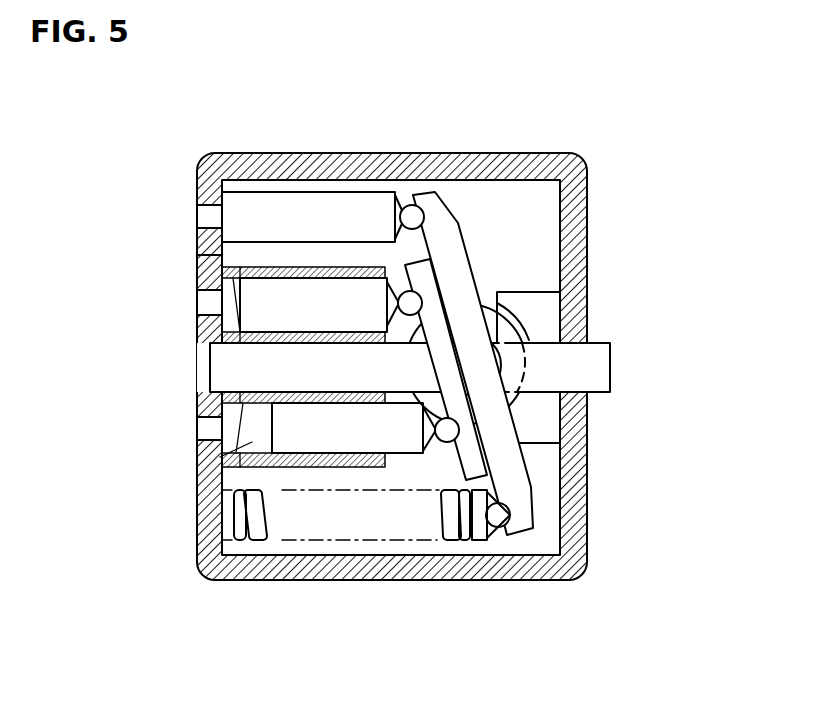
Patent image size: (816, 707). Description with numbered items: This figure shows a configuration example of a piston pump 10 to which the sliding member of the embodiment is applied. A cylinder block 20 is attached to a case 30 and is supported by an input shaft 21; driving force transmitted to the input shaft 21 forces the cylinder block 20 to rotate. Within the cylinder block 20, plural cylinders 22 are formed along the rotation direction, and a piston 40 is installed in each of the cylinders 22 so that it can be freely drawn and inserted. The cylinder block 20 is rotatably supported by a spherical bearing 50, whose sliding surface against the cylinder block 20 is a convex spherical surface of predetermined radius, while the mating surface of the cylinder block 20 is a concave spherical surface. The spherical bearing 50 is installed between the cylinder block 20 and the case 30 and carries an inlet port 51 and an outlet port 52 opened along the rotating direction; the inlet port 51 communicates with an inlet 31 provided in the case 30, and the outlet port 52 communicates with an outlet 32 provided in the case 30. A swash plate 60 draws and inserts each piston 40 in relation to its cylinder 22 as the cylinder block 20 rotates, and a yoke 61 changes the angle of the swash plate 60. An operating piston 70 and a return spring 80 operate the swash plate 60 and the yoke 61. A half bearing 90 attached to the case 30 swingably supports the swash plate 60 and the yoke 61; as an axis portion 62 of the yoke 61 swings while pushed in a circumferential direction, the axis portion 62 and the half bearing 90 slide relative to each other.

The piston pump 10 is at (575, 143).
The cylinder block 20 is at (302, 268).
The input shaft 21 is at (596, 368).
The cylinder 22 is at (233, 453).
The case 30 is at (586, 214).
The inlet 31 is at (205, 307).
The outlet 32 is at (203, 423).
The piston 40 is at (335, 296).
The spherical bearing 50 is at (200, 255).
The inlet port 51 is at (222, 281).
The outlet port 52 is at (230, 432).
The swash plate 60 is at (523, 461).
The yoke 61 is at (527, 488).
The axis portion 62 is at (520, 377).
The operating piston 70 is at (263, 207).
The return spring 80 is at (453, 540).
The half bearing 90 is at (527, 332).